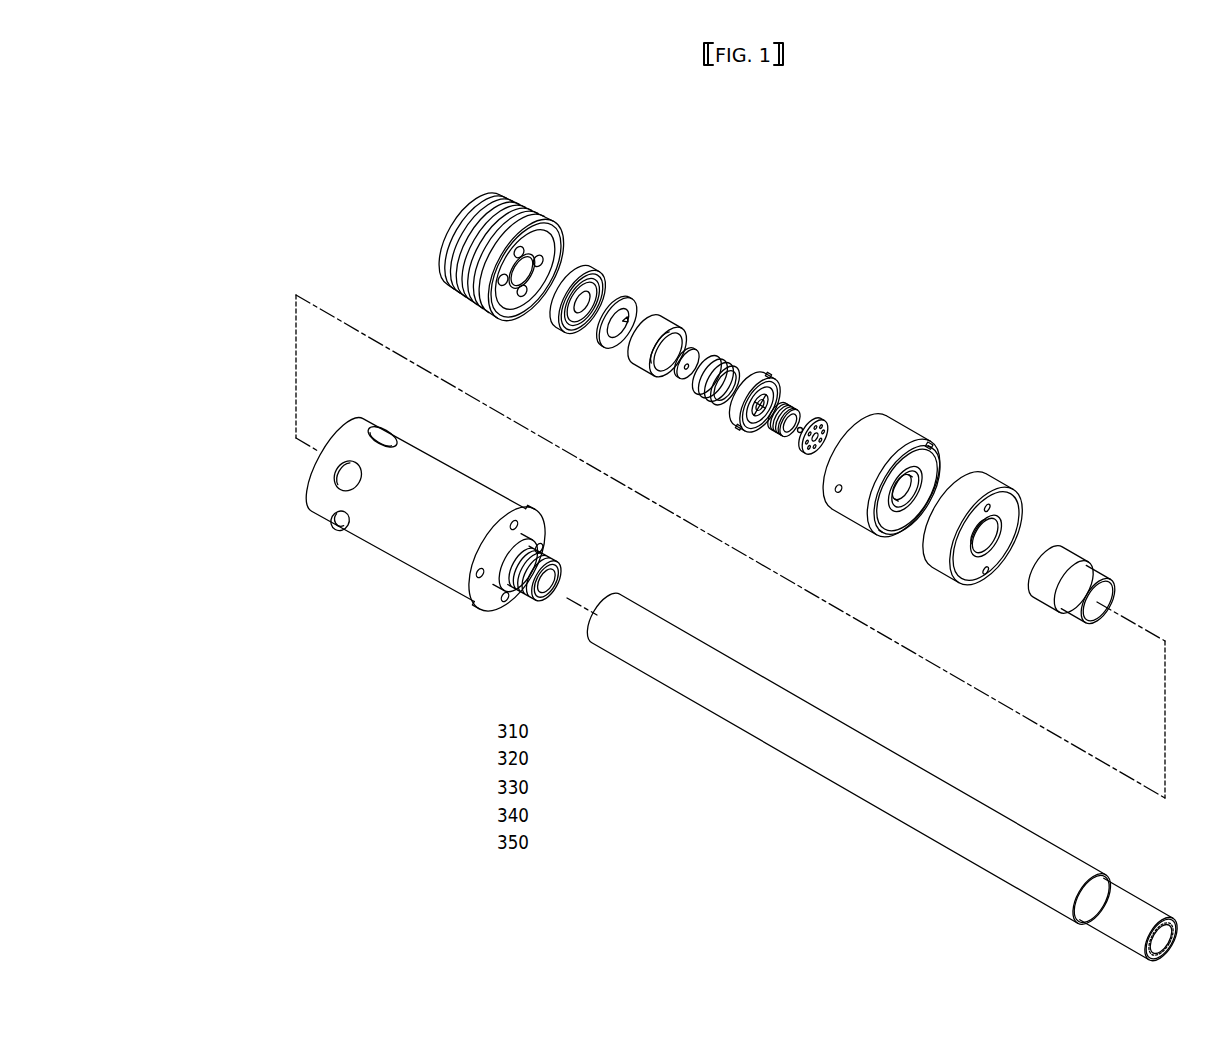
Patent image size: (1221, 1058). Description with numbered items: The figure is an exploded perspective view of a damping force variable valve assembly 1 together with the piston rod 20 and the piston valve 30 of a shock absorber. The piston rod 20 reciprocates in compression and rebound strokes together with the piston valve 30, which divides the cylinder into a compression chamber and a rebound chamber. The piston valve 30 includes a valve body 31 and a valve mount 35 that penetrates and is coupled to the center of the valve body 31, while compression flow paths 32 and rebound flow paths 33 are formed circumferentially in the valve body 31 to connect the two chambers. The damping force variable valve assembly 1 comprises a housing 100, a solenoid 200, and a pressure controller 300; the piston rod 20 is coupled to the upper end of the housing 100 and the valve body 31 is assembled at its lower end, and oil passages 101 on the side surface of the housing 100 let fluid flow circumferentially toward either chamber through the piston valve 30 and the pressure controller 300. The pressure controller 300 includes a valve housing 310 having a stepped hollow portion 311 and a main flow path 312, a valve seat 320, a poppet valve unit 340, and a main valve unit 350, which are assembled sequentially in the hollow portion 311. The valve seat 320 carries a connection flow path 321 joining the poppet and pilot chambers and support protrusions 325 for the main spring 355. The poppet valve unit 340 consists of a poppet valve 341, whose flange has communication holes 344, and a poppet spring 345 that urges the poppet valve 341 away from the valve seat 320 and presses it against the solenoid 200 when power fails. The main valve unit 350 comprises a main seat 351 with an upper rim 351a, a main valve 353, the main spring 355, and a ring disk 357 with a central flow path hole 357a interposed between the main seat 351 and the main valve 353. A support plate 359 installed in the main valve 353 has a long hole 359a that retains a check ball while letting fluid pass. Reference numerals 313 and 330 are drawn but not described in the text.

The damping force variable valve assembly 1 is at (1094, 418).
The piston rod 20 is at (835, 768).
The piston valve 30 is at (430, 224).
The valve body 31 is at (478, 277).
The compression flow path 32 is at (522, 286).
The rebound flow path 33 is at (502, 290).
The valve mount 35 is at (534, 283).
The housing 100 is at (410, 555).
The oil passage 101 is at (330, 522).
The solenoid 200 is at (1081, 567).
The pressure controller 300 is at (492, 726).
The valve housing 310 is at (896, 444).
The hollow portion 311 is at (918, 505).
The main flow path 312 is at (838, 502).
The bearing seat 313 is at (904, 482).
The valve seat 320 is at (763, 382).
The connection flow path 321 is at (761, 416).
The support protrusion 325 is at (736, 403).
The flange ring 330 is at (978, 487).
The poppet valve unit 340 is at (884, 382).
The poppet valve 341 is at (821, 418).
The communication hole 344 is at (806, 453).
The poppet spring 345 is at (787, 411).
The main valve unit 350 is at (768, 300).
The main seat 351 is at (580, 274).
The upper rim 351a is at (580, 322).
The main valve 353 is at (661, 326).
The main spring 355 is at (723, 370).
The ring disk 357 is at (628, 300).
The flow path hole 357a is at (620, 335).
The support plate 359 is at (696, 357).
The long hole 359a is at (688, 372).